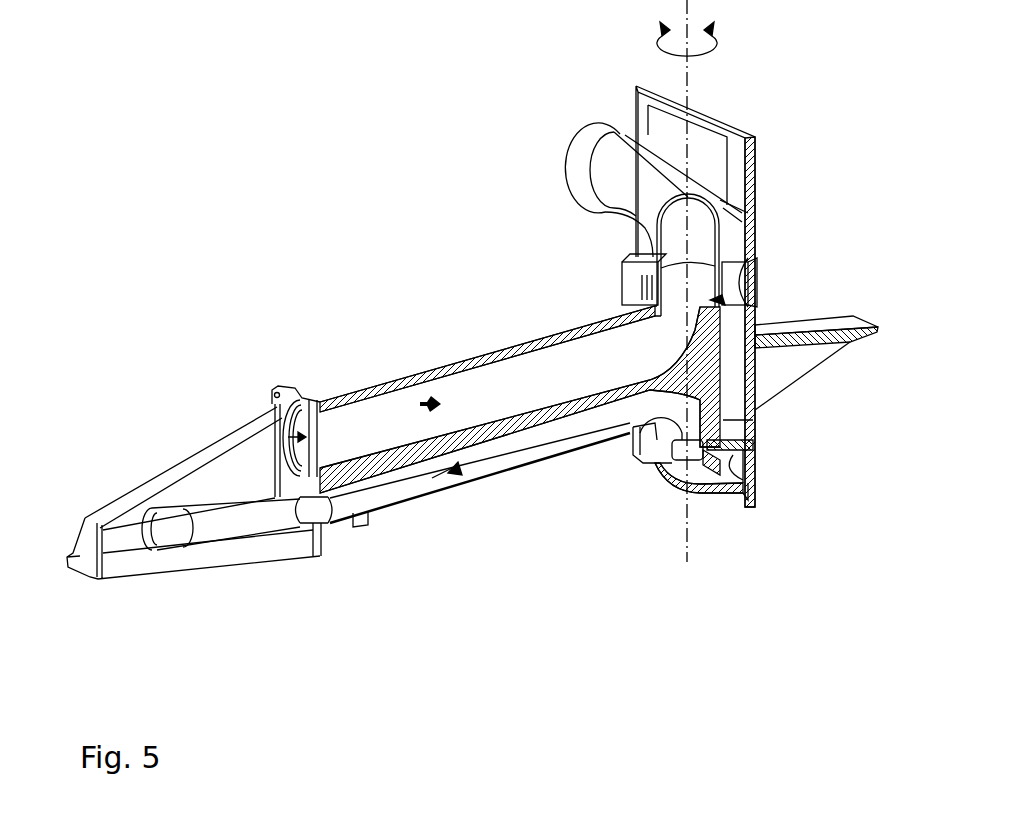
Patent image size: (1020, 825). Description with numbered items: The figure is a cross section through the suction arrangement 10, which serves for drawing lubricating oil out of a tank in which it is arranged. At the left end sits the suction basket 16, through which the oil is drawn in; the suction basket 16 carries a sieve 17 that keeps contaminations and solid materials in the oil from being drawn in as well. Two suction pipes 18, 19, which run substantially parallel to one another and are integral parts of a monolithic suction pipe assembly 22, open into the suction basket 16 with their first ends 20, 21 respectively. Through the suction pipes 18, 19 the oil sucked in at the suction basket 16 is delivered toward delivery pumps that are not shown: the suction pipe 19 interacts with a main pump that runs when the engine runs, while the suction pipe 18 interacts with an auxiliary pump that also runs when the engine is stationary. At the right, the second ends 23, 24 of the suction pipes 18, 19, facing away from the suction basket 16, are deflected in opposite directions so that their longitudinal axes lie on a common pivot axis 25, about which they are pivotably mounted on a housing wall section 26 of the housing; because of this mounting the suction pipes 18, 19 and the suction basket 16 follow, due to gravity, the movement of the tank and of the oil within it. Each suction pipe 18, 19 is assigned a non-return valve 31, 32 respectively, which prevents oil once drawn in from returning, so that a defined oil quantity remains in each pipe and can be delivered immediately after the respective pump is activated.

The suction arrangement 10 is at (441, 280).
The suction basket 16 is at (196, 468).
The sieve 17 is at (136, 584).
The suction pipe 18 is at (436, 478).
The suction pipe 19 is at (420, 404).
The first end 20 is at (279, 385).
The first end 21 is at (300, 542).
The suction pipe assembly 22 is at (482, 358).
The second end 23 is at (727, 300).
The second end 24 is at (700, 437).
The pivot axis 25 is at (691, 549).
The housing wall section 26 is at (740, 160).
The non-return valve 31 is at (278, 426).
The non-return valve 32 is at (172, 553).